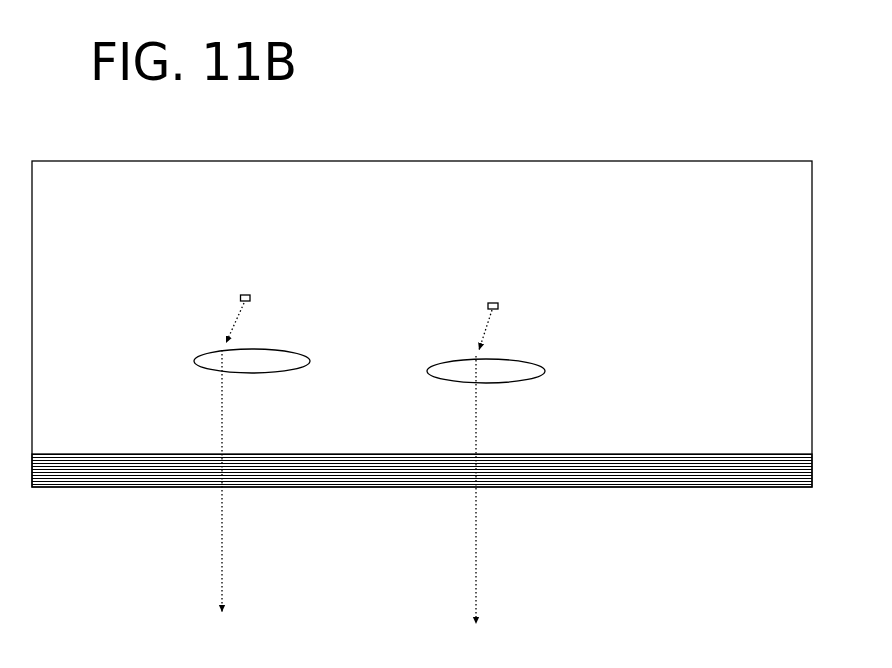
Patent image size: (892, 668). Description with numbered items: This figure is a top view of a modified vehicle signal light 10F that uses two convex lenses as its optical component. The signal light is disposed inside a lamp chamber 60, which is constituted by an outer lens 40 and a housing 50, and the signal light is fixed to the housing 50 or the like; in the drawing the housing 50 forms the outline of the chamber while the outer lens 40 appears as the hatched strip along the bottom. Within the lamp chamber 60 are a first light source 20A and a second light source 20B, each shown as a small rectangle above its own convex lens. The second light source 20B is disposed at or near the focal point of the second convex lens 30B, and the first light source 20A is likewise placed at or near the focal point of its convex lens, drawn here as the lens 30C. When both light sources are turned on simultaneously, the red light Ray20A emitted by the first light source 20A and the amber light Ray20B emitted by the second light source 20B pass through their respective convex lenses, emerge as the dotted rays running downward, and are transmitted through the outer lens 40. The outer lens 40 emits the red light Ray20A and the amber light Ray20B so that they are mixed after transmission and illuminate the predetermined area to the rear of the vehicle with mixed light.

The vehicle signal light 10F is at (410, 62).
The housing 50 is at (472, 160).
The lamp chamber 60 is at (573, 212).
The outer lens 40 is at (703, 490).
The second light source 20B is at (240, 298).
The first light source 20A is at (498, 309).
The second convex lens 30B is at (287, 372).
The lens 30C is at (520, 383).
The amber light Ray20B is at (220, 531).
The red light Ray20A is at (478, 563).